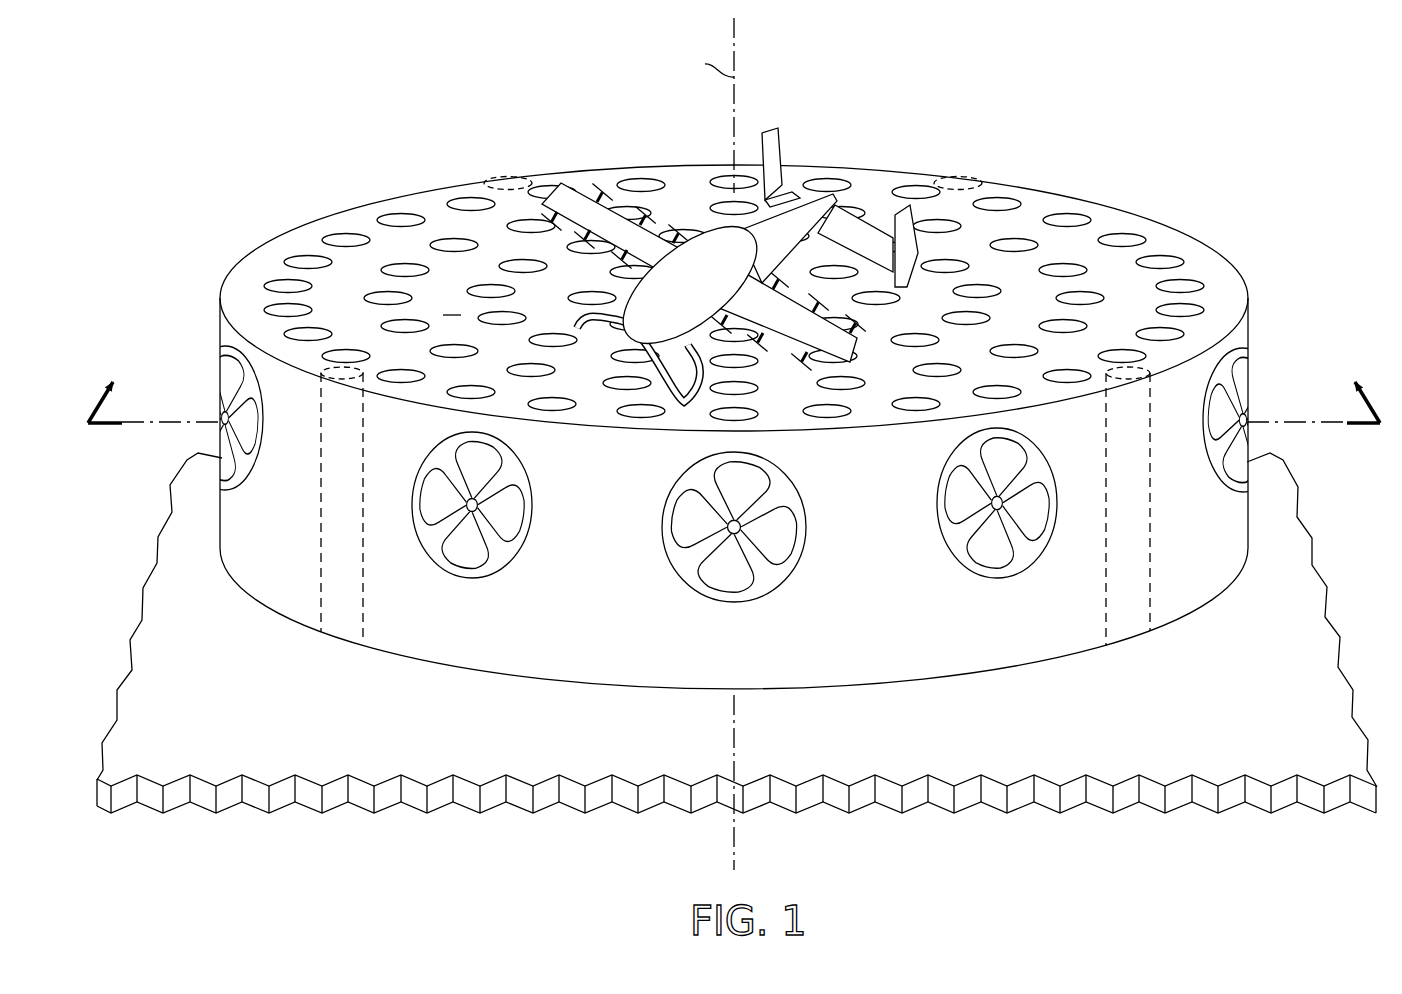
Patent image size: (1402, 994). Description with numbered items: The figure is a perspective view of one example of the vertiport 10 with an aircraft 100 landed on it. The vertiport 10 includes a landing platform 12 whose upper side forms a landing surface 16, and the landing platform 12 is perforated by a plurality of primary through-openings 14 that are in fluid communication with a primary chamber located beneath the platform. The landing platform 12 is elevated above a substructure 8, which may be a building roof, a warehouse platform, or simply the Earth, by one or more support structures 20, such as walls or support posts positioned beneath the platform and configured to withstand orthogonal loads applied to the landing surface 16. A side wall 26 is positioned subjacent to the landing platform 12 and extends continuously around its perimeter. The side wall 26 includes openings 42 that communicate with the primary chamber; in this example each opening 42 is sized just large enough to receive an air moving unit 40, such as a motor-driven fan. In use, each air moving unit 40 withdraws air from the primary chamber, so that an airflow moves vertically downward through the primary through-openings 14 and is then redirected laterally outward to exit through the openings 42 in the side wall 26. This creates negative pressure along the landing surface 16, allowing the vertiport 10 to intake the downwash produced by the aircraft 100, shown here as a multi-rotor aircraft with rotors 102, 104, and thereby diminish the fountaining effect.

The substructure 8 is at (146, 641).
The vertiport 10 is at (734, 444).
The landing platform 12 is at (734, 278).
The primary through-openings 14 is at (349, 236).
The landing surface 16 is at (906, 314).
The support structures 20 is at (516, 178).
The side wall 26 is at (738, 493).
The air moving unit 40 is at (1255, 527).
The openings 42 is at (532, 489).
The aircraft 100 is at (728, 262).
The rotor 102 is at (590, 184).
The rotor 104 is at (820, 303).